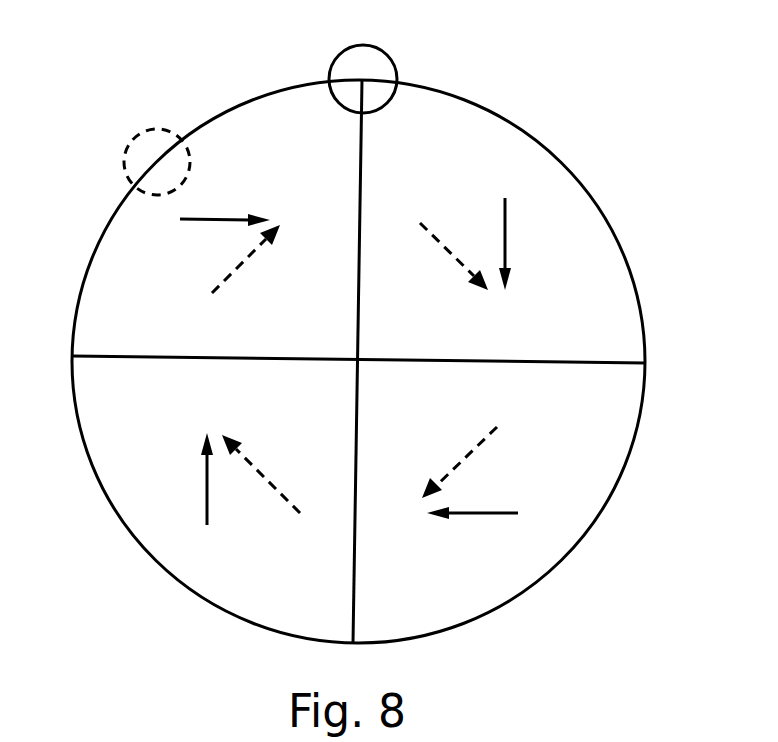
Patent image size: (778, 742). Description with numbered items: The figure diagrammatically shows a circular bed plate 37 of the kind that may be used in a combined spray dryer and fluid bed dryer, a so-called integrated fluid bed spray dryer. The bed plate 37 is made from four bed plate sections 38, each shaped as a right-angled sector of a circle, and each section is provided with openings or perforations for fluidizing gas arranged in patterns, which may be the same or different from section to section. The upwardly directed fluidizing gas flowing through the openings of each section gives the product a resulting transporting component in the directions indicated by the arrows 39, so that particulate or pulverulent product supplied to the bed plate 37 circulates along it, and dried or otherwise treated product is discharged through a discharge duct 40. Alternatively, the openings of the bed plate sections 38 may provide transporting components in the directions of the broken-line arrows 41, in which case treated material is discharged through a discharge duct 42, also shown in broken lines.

The circular bed plate 37 is at (612, 268).
The bed plate sections 38 is at (110, 262).
The arrows 39 is at (219, 219).
The discharge duct 40 is at (380, 64).
The arrows in broken lines 41 is at (249, 255).
The discharge duct 42 is at (142, 134).